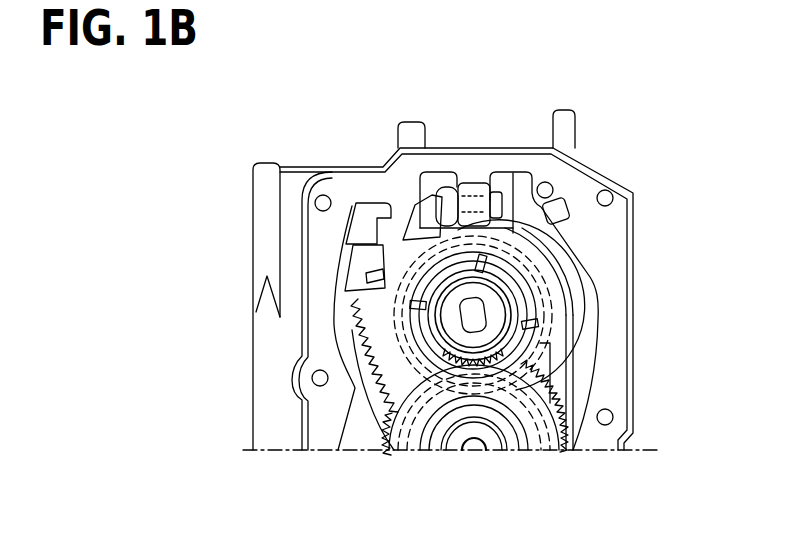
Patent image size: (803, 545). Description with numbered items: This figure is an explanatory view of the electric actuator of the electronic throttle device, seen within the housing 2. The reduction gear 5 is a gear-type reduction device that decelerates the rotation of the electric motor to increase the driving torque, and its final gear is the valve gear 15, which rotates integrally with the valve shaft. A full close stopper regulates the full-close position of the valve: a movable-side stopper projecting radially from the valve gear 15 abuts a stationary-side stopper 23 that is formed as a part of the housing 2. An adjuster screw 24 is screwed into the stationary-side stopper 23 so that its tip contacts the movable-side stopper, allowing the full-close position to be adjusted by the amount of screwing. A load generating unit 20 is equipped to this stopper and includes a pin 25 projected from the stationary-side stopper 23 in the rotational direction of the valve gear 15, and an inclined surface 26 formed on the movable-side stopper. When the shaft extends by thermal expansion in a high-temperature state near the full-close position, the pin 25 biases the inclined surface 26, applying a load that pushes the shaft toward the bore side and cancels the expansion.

The housing 2 is at (366, 185).
The reduction gear 5 is at (366, 430).
The valve gear 15 is at (355, 337).
The load generating unit 20 is at (462, 90).
The stationary-side stopper 23 is at (473, 193).
The adjuster screw 24 is at (498, 193).
The pin 25 is at (442, 190).
The inclined surface 26 is at (422, 215).